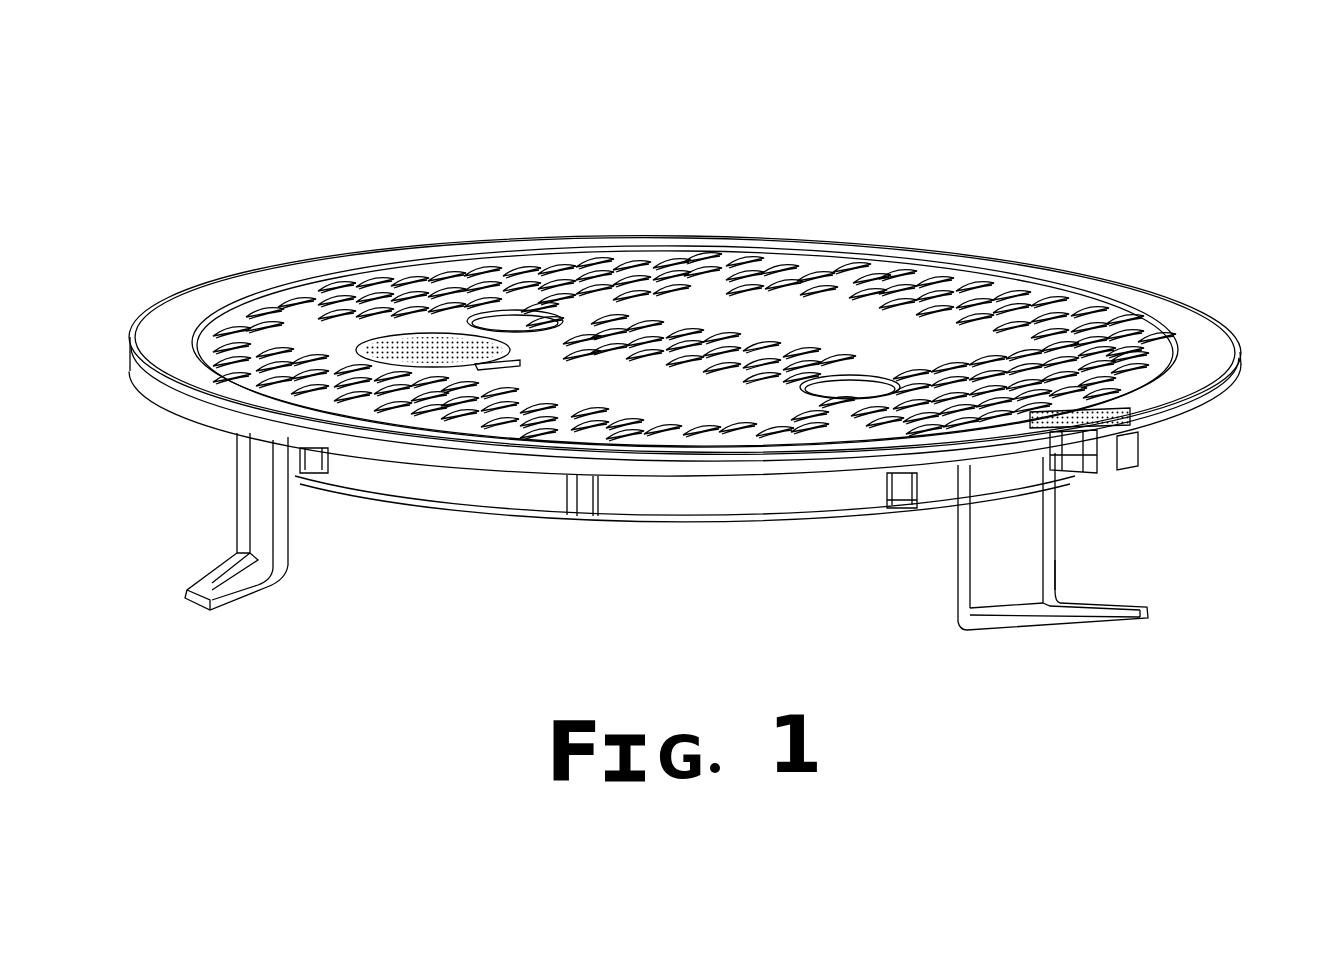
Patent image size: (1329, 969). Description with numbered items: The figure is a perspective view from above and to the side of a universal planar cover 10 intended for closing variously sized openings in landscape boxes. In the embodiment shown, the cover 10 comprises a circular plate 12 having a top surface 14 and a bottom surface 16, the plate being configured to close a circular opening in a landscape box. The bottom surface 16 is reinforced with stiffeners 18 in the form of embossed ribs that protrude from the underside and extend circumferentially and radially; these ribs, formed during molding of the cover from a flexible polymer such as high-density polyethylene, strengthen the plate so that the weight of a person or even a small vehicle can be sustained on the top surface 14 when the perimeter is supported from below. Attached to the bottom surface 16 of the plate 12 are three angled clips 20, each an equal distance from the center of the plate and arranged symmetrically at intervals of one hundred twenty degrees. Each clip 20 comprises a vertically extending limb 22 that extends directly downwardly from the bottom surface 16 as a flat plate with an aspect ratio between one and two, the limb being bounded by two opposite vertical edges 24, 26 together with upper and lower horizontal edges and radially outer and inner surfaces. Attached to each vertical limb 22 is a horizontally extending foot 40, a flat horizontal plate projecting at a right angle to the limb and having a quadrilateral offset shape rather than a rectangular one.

The planar cover 10 is at (877, 145).
The circular plate 12 is at (200, 300).
The top surface 14 is at (1210, 343).
The bottom surface 16 is at (1208, 408).
The stiffeners 18 is at (467, 480).
The angled clips 20 is at (294, 550).
The vertically extending limb 22 is at (985, 537).
The vertical edge 24 is at (963, 597).
The vertical edge 26 is at (1050, 572).
The horizontally extending foot 40 is at (1091, 621).